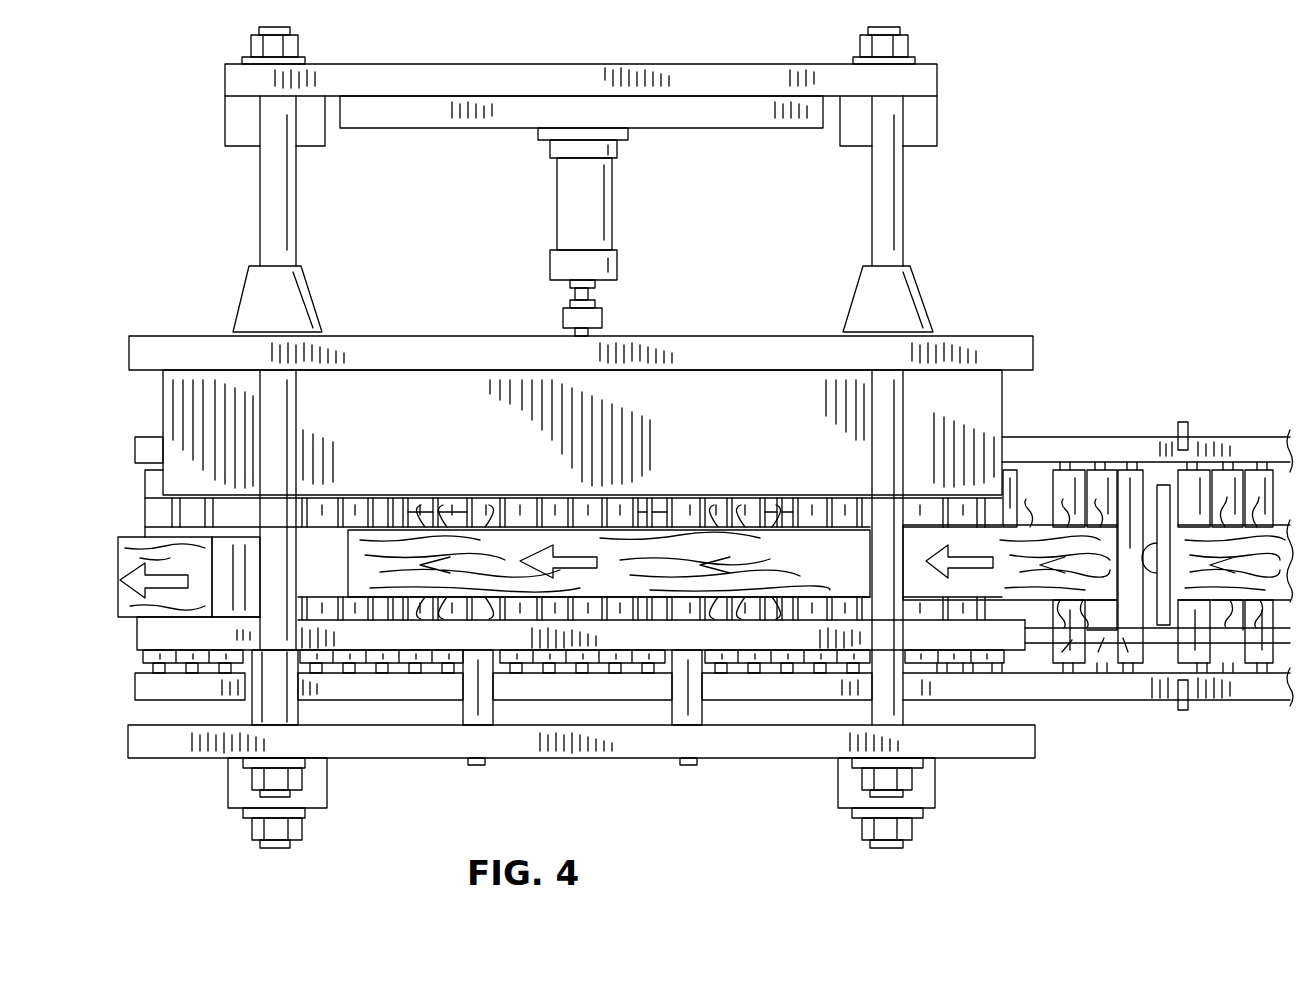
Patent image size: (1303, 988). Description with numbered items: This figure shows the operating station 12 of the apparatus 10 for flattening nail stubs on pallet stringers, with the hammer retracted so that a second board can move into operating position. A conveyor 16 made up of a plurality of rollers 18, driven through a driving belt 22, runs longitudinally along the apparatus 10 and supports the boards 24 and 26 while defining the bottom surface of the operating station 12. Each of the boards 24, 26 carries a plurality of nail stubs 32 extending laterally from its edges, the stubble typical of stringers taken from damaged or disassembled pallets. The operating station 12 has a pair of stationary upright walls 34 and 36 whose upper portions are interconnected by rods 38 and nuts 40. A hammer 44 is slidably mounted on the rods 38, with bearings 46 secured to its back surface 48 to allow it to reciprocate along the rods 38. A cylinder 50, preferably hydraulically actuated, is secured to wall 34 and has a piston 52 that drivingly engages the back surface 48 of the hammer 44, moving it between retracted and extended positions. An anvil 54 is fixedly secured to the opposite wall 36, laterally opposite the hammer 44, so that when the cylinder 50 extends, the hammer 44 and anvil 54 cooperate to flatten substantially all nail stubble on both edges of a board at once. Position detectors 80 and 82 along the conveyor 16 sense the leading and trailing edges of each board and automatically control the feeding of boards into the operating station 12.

The apparatus 10 is at (1112, 192).
The operating station 12 is at (1048, 410).
The conveyor 16 is at (1088, 442).
The rollers 18 is at (1132, 652).
The driving belt 22 is at (1038, 636).
The board 24 is at (188, 543).
The board 26 is at (460, 543).
The nail stubs 32 is at (774, 503).
The stationary upright wall 34 is at (937, 80).
The stationary upright wall 36 is at (1003, 750).
The rods 38 is at (277, 213).
The nuts 40 is at (292, 47).
The hammer 44 is at (685, 424).
The bearings 46 is at (297, 303).
The back surface 48 is at (757, 348).
The cylinder 50 is at (595, 215).
The piston 52 is at (570, 292).
The anvil 54 is at (703, 645).
The position detector 80 is at (1184, 422).
The position detector 82 is at (1183, 711).